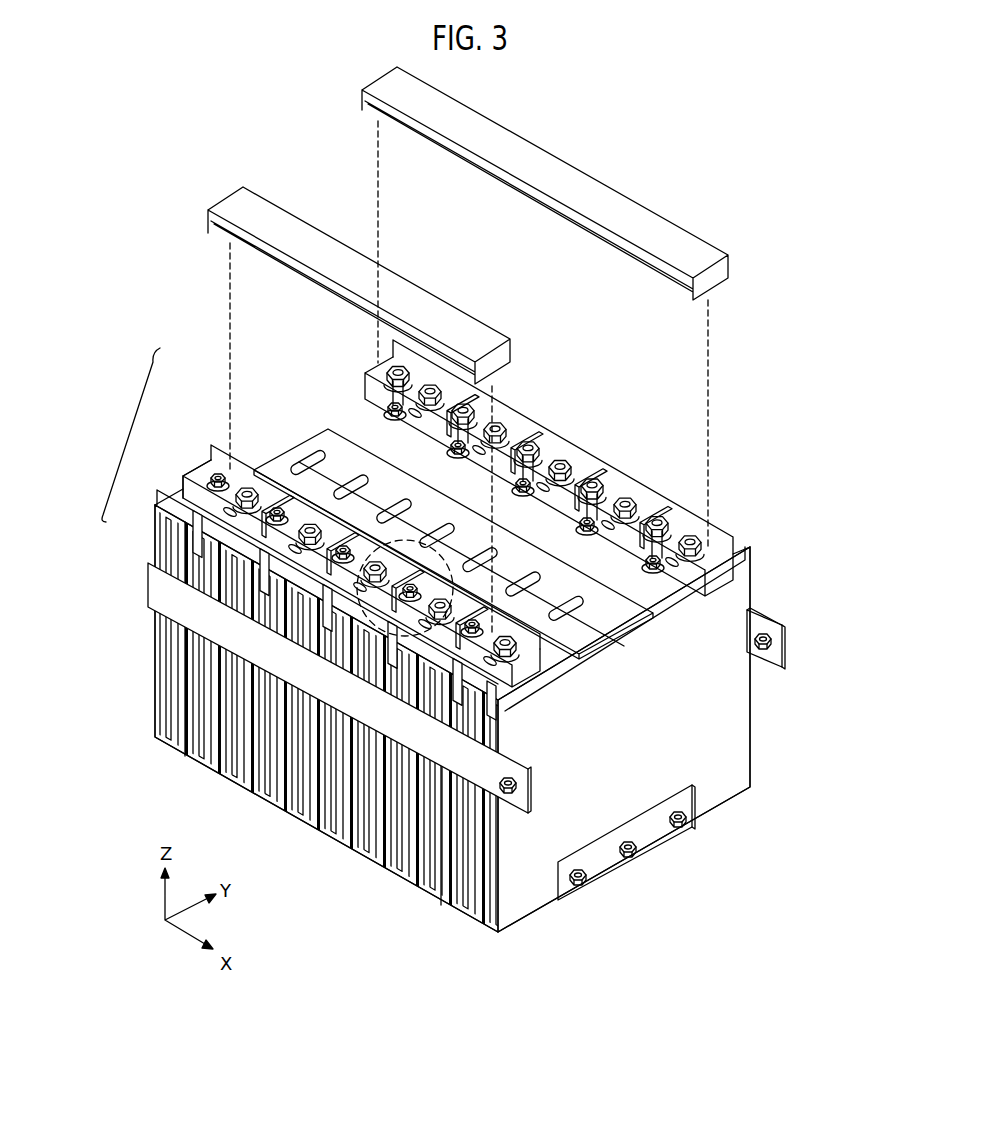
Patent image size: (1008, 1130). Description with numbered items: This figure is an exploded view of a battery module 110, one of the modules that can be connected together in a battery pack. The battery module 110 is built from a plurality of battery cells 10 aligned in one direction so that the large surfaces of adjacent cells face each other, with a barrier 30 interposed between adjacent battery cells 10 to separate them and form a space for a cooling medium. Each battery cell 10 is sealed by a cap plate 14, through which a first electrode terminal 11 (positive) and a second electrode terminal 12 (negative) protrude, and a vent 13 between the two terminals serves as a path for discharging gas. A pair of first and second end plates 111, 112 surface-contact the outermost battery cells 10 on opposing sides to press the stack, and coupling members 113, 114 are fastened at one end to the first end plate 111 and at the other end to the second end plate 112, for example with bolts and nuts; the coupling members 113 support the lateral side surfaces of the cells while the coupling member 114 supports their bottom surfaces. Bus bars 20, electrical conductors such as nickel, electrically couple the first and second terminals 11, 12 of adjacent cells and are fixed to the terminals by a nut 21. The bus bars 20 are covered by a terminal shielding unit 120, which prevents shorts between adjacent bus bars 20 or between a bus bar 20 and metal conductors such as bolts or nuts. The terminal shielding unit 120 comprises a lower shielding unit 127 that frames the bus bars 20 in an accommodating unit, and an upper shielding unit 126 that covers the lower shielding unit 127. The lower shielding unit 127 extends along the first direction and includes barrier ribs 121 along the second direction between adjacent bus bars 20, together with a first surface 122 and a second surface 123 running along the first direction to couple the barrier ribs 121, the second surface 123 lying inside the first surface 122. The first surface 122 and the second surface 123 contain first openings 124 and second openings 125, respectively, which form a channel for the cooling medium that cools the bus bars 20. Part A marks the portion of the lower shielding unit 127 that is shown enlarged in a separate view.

The battery module 110 is at (727, 172).
The first end plate 111 is at (152, 683).
The second end plate 112 is at (741, 726).
The coupling member 113 is at (767, 613).
The coupling member 114 is at (558, 899).
The terminal shielding unit 120 is at (88, 450).
The barrier rib 121 is at (235, 458).
The first surface 122 is at (170, 512).
The second surface 123 is at (270, 485).
The first opening 124 is at (190, 496).
The second opening 125 is at (225, 468).
The upper shielding unit 126 is at (462, 128).
The lower shielding unit 127 is at (131, 430).
The battery cell 10 is at (218, 740).
The barrier 30 is at (190, 737).
The first electrode terminal 11 is at (537, 443).
The second electrode terminal 12 is at (582, 452).
The vent 13 is at (310, 456).
The cap plate 14 is at (350, 452).
The bus bar 20 is at (555, 455).
The nut 21 is at (527, 445).
The part A is at (357, 585).